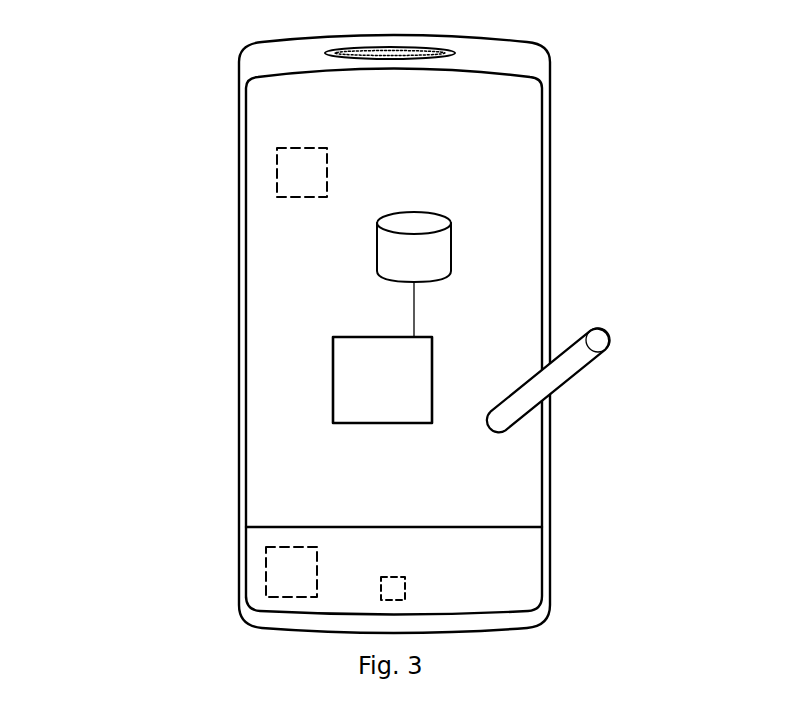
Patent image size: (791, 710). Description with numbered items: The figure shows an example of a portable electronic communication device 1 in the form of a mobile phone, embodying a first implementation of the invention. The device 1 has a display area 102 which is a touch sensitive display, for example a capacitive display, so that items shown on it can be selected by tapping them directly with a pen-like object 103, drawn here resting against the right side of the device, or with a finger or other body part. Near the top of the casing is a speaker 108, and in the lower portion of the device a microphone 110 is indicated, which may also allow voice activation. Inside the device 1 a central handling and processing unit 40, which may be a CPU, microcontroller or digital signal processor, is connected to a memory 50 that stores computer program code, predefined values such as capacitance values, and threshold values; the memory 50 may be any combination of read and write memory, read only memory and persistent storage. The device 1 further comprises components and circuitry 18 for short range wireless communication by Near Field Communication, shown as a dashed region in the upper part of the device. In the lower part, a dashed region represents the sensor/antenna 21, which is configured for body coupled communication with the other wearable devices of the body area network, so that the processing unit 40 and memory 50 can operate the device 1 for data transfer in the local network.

The portable electronic communication device 1 is at (568, 249).
The display area 102 is at (462, 148).
The speaker 108 is at (312, 55).
The components and circuitry for Near Field Communication 18 is at (292, 173).
The memory 50 is at (414, 274).
The central handling and processing unit 40 is at (382, 380).
The pen-like object 103 is at (563, 363).
The sensor/antenna 21 is at (287, 577).
The microphone 110 is at (421, 591).